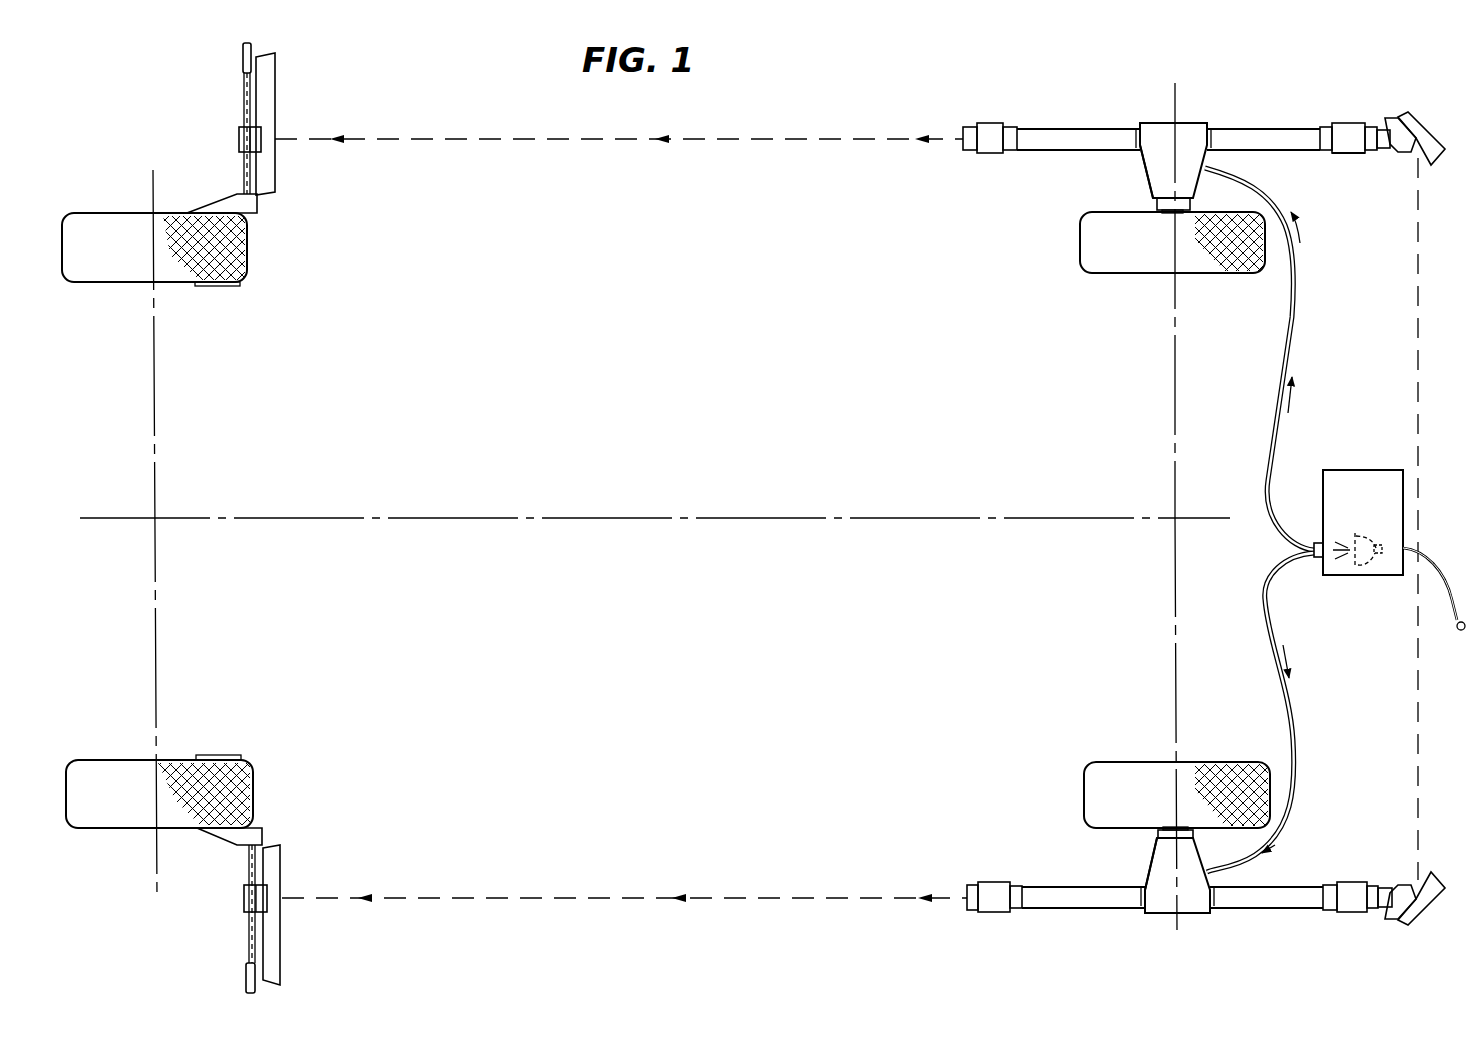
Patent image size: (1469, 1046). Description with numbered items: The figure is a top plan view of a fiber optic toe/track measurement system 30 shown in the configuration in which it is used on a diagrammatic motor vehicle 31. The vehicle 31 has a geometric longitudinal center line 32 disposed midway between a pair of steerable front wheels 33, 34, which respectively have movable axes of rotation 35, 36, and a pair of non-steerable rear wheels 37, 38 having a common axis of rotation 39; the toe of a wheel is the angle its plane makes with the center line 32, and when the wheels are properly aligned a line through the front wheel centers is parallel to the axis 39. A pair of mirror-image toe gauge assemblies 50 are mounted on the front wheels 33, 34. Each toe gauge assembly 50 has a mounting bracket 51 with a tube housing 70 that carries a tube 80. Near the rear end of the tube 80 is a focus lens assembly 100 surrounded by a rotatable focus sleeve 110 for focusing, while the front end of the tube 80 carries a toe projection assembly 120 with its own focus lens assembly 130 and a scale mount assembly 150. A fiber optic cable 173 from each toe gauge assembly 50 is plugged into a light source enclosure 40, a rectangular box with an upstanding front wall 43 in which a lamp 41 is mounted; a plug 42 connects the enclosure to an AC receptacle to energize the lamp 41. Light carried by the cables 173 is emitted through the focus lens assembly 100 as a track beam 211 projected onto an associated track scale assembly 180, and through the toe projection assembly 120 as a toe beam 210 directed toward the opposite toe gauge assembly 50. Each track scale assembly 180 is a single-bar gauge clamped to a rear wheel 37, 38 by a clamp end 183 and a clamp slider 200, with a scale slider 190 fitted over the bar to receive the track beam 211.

The fiber optic toe/track measurement system 30 is at (851, 91).
The motor vehicle 31 is at (403, 238).
The geometric longitudinal center line 32 is at (666, 516).
The steerable front wheel 33 is at (1212, 274).
The steerable front wheel 34 is at (1238, 763).
The movable axis of rotation 35 is at (1170, 310).
The movable axis of rotation 36 is at (1172, 685).
The non-steerable rear wheel 37 is at (105, 272).
The non-steerable rear wheel 38 is at (103, 759).
The common axis of rotation 39 is at (157, 660).
The light source enclosure 40 is at (1361, 467).
The lamp 41 is at (1368, 570).
The plug 42 is at (1449, 601).
The front wall 43 is at (1322, 482).
The toe gauge assembly 50 is at (1107, 117).
The mounting bracket 51 is at (1146, 171).
The tube housing 70 is at (1191, 119).
The tube 80 is at (1273, 127).
The focus lens assembly 100 is at (995, 117).
The focus sleeve 110 is at (993, 877).
The toe projection assembly 120 is at (1339, 155).
The focus lens assembly 130 is at (1343, 117).
The scale mount assembly 150 is at (1391, 111).
The fiber optic cable 173 is at (1295, 320).
The track scale assembly 180 is at (290, 106).
The clamp end 183 is at (210, 287).
The scale slider 190 is at (235, 137).
The clamp slider 200 is at (226, 191).
The toe beam 210 is at (1420, 348).
The track beam 211 is at (692, 141).